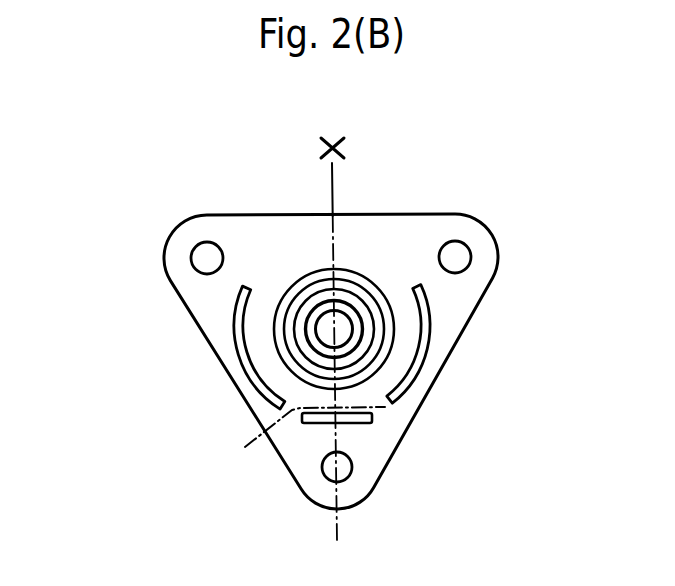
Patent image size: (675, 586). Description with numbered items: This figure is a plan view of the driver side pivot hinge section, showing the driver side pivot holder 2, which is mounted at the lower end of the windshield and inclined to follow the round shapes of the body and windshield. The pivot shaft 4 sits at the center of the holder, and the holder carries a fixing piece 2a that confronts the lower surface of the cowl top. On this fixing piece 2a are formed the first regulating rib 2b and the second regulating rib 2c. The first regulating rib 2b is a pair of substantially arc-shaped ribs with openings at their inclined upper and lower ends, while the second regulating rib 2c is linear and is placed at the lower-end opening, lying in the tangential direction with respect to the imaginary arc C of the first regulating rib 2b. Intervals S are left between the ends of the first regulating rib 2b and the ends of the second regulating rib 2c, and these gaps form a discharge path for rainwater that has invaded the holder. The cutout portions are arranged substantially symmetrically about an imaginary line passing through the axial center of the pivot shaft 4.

The driver side pivot holder 2 is at (168, 363).
The fixing piece 2a is at (467, 228).
The first regulating rib 2b is at (425, 363).
The second regulating rib 2c is at (368, 425).
The pivot shaft 4 is at (343, 326).
The imaginary arc C is at (245, 447).
The intervals S is at (293, 424).